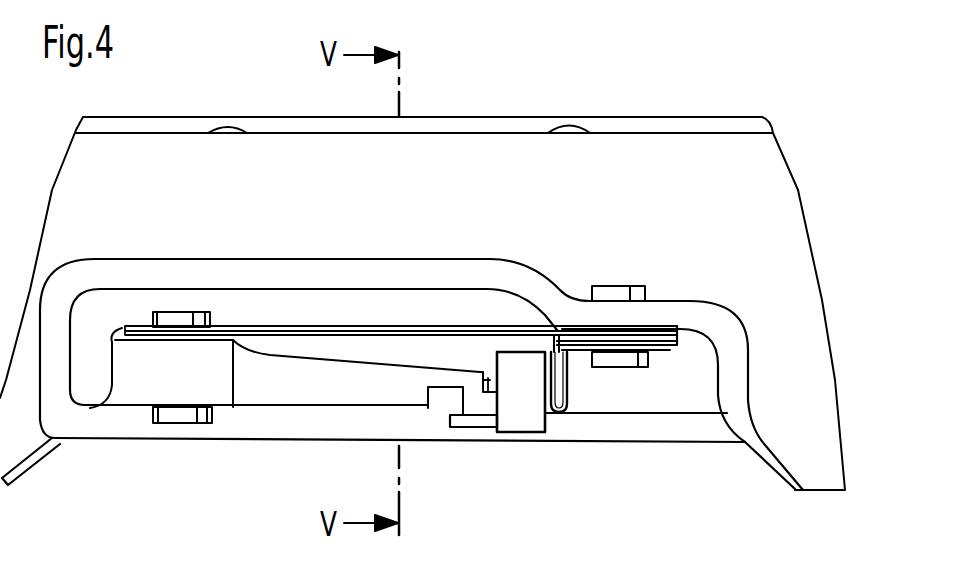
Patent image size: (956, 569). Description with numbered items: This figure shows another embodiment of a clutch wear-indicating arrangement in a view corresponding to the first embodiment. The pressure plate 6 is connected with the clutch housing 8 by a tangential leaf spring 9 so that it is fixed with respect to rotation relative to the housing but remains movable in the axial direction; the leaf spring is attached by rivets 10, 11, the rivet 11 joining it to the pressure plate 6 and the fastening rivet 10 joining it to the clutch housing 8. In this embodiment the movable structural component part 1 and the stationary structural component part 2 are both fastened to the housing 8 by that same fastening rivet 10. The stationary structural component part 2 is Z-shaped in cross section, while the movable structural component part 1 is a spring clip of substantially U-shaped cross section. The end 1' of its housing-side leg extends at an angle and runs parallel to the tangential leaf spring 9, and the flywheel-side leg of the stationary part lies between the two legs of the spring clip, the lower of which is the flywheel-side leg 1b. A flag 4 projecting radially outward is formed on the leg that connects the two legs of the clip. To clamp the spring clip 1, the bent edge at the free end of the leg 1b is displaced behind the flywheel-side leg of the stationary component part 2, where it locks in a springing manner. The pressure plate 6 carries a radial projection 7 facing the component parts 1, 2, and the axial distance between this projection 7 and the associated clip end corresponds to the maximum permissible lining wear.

The movable structural component part 1 is at (523, 434).
The end of the leg on the housing side 1' is at (575, 280).
The flywheel-side leg 1b is at (492, 426).
The stationary structural component part 2 is at (570, 382).
The flag 4 is at (490, 395).
The pressure plate 6 is at (278, 395).
The radial projection 7 is at (443, 403).
The clutch housing 8 is at (737, 343).
The tangential leaf spring 9 is at (373, 325).
The fastening rivet 10 is at (641, 284).
The rivet 11 is at (172, 415).